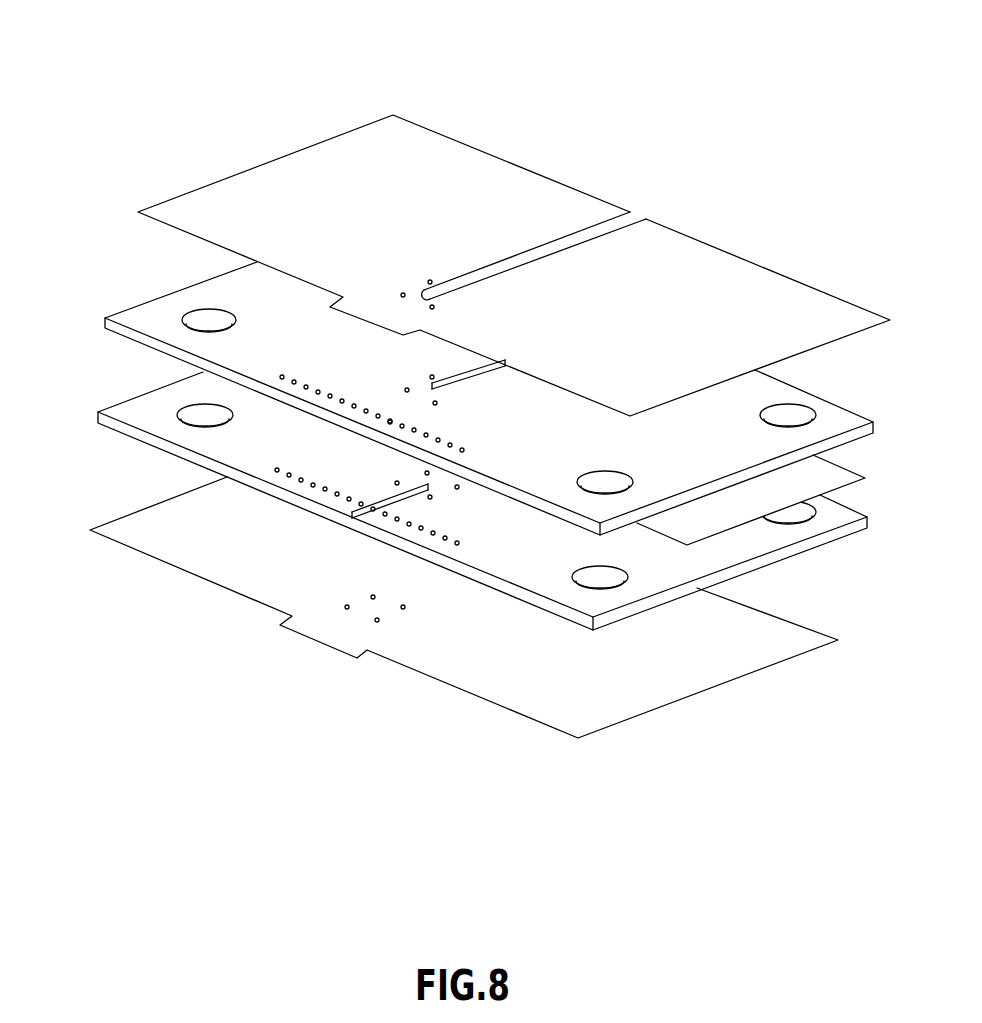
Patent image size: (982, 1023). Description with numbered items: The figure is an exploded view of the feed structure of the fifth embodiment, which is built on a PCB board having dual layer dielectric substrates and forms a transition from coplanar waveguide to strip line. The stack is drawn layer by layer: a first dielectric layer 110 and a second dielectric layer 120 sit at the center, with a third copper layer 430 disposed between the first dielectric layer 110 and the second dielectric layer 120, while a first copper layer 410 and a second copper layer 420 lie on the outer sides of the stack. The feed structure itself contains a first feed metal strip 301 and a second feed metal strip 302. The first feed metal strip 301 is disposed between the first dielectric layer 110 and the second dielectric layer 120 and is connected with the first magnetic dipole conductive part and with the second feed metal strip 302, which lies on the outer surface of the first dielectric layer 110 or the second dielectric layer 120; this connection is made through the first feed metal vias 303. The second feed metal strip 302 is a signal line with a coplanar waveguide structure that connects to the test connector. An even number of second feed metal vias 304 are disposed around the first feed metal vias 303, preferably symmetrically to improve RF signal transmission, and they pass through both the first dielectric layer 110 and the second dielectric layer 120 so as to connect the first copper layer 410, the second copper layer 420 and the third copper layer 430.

The first dielectric layer 110 is at (452, 486).
The second dielectric layer 120 is at (455, 363).
The first feed metal strip 301 is at (285, 593).
The second feed metal strip 302 is at (492, 602).
The first feed metal vias 303 is at (350, 575).
The second feed metal vias 304 is at (403, 621).
The first copper layer 410 is at (464, 682).
The second copper layer 420 is at (514, 240).
The third copper layer 430 is at (751, 652).